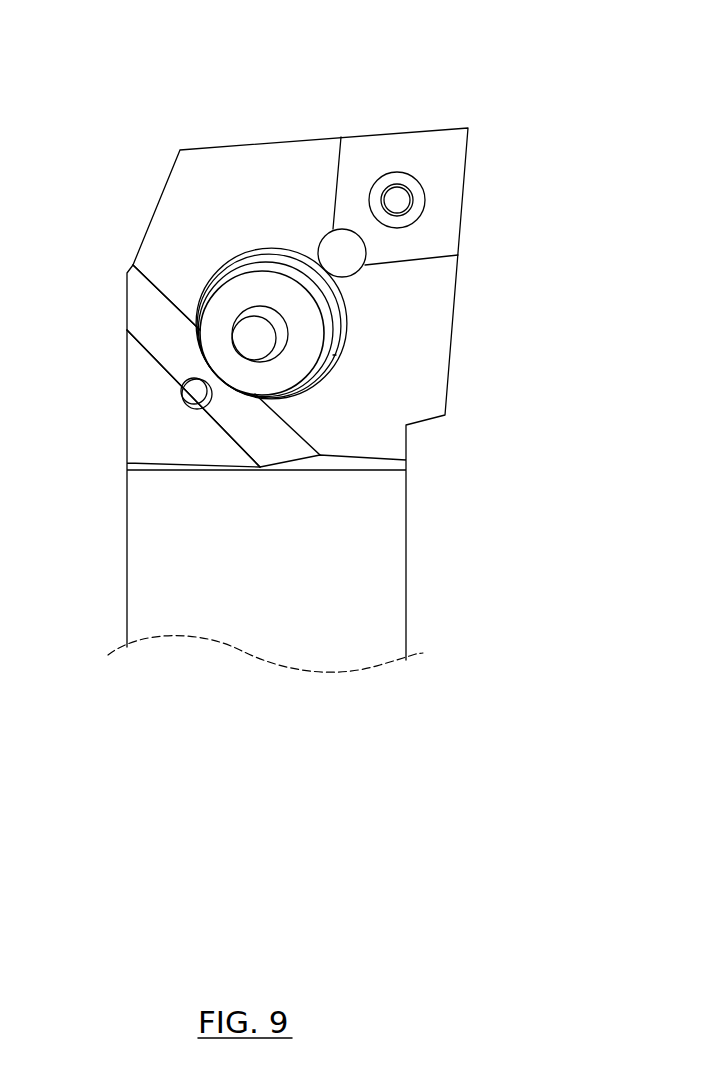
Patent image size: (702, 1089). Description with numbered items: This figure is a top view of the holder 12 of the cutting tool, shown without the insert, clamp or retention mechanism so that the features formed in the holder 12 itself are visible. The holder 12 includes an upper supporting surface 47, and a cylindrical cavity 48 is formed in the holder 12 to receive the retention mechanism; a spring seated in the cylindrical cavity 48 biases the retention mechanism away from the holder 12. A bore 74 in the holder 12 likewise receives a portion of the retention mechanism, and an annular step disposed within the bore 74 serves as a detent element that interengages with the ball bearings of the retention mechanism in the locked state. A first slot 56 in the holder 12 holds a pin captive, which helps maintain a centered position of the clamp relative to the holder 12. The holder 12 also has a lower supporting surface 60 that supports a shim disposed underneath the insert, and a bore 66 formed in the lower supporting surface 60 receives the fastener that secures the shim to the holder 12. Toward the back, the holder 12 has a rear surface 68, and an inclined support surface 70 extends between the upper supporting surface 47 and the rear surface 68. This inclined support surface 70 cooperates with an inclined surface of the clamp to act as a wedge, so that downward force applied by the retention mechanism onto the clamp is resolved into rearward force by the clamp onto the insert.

The holder 12 is at (228, 200).
The upper supporting surface 47 is at (405, 312).
The cylindrical cavity 48 is at (333, 355).
The first slot 56 is at (183, 403).
The lower supporting surface 60 is at (430, 161).
The bore 66 is at (398, 202).
The rear surface 68 is at (155, 437).
The inclined support surface 70 is at (165, 333).
The bore 74 is at (273, 327).